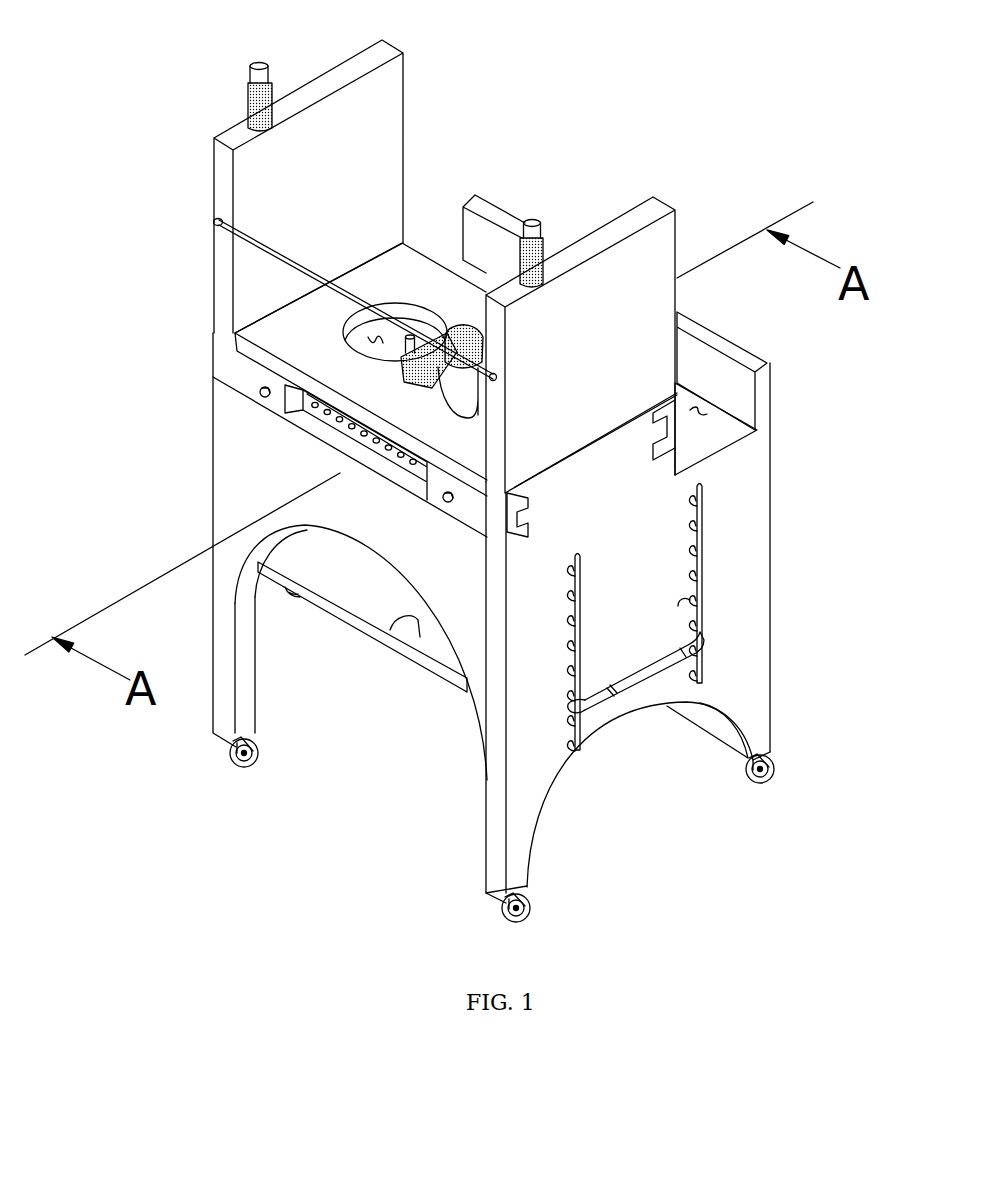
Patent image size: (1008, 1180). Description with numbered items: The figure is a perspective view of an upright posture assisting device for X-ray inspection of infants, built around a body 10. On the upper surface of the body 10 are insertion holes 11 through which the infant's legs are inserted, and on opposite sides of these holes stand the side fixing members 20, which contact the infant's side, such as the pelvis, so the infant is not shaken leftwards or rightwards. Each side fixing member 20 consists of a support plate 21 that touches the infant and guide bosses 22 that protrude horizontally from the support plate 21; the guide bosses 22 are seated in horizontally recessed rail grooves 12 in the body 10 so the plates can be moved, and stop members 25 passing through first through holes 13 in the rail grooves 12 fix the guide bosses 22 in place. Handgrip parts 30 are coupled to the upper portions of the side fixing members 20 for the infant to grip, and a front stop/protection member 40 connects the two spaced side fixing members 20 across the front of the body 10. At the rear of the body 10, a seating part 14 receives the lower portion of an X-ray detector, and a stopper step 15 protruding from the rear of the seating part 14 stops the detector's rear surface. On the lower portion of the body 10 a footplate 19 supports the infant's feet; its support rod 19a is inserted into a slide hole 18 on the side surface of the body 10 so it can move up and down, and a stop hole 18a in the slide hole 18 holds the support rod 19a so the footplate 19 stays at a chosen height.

The body 10 is at (232, 510).
The insertion holes 11 is at (373, 335).
The rail grooves 12 is at (382, 460).
The first through holes 13 is at (325, 405).
The seating part 14 is at (740, 440).
The stopper step 15 is at (740, 358).
The slide hole 18 is at (700, 550).
The stop hole 18a is at (690, 600).
The footplate 19 is at (390, 630).
The support rod 19a is at (608, 694).
The side fixing members 20 is at (84, 284).
The support plates 21 is at (245, 267).
The guide bosses 22 is at (213, 396).
The stop members 25 is at (262, 396).
The handgrip parts 30 is at (250, 74).
The front stop/protection member 40 is at (310, 275).